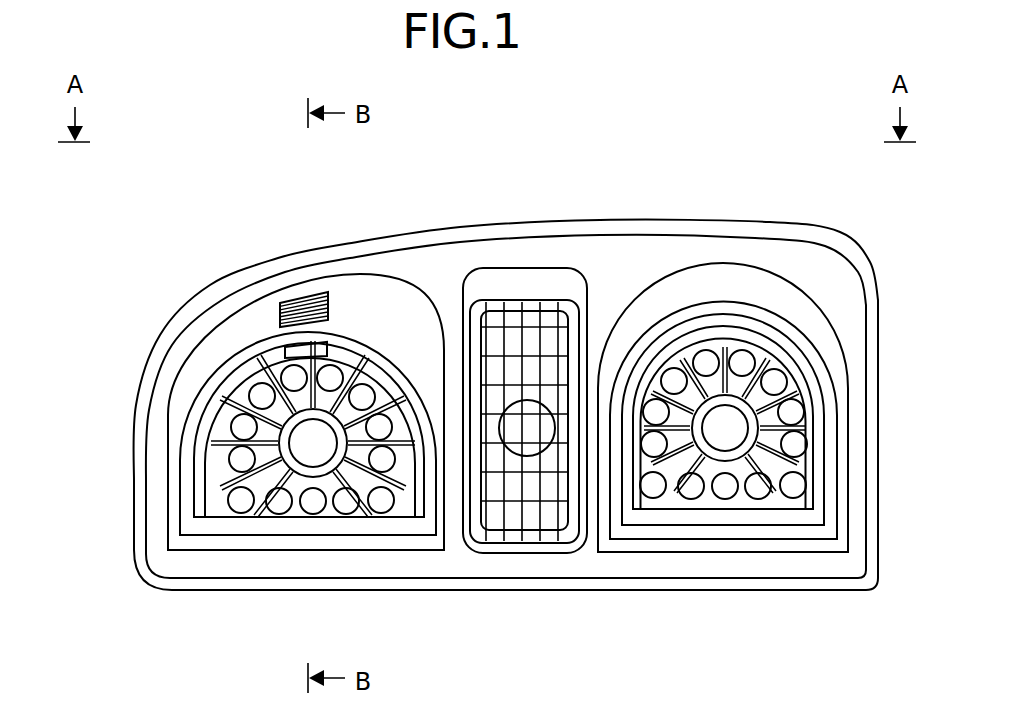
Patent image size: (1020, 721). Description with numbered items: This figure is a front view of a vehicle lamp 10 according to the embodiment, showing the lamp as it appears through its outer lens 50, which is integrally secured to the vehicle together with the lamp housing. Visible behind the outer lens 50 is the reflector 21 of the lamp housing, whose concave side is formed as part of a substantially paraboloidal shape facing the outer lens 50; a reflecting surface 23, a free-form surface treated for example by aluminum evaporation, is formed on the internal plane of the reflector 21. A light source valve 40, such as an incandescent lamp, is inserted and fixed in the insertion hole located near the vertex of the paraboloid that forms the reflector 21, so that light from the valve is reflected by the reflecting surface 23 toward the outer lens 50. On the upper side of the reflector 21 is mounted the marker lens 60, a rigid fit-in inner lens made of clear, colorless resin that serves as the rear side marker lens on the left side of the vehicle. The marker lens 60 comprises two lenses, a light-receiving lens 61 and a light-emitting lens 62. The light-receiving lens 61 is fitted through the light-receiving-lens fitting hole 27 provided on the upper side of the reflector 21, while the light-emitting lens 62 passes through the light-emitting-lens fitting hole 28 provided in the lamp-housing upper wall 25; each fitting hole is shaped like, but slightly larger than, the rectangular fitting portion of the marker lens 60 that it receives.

The vehicle lamp 10 is at (634, 194).
The reflector 21 is at (321, 493).
The reflecting surface 23 is at (356, 508).
The lamp-housing upper wall 25 is at (388, 290).
The light-receiving-lens fitting hole 27 is at (288, 358).
The light-emitting-lens fitting hole 28 is at (340, 292).
The light source valve 40 is at (262, 506).
The outer lens 50 is at (462, 262).
The marker lens 60 is at (226, 275).
The light-receiving lens 61 is at (292, 350).
The light-emitting lens 62 is at (300, 305).